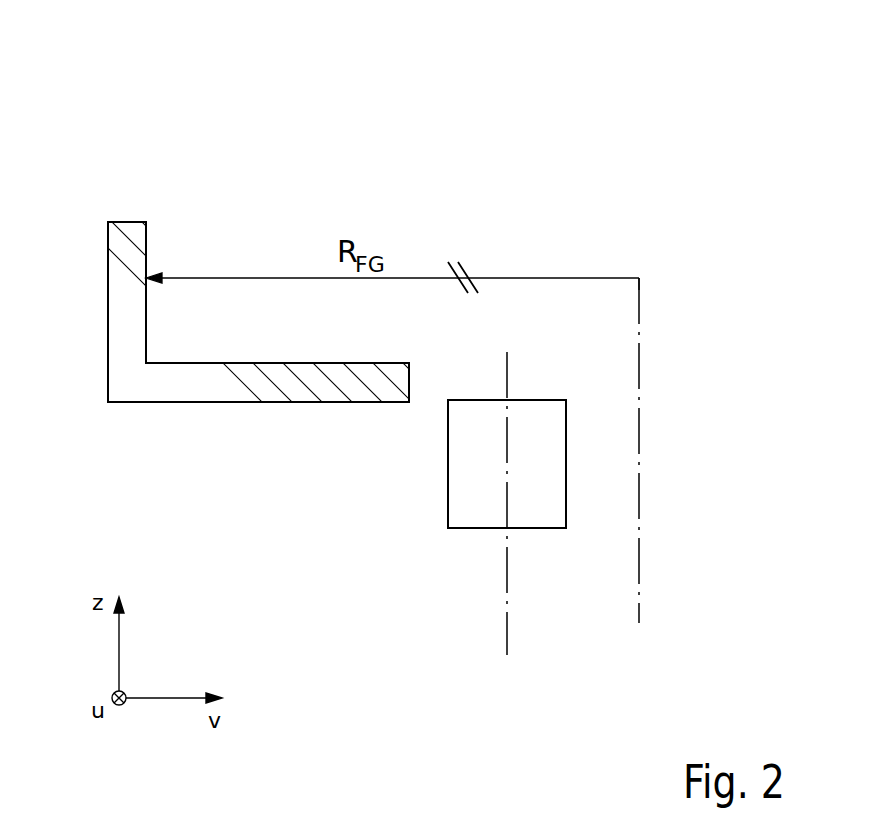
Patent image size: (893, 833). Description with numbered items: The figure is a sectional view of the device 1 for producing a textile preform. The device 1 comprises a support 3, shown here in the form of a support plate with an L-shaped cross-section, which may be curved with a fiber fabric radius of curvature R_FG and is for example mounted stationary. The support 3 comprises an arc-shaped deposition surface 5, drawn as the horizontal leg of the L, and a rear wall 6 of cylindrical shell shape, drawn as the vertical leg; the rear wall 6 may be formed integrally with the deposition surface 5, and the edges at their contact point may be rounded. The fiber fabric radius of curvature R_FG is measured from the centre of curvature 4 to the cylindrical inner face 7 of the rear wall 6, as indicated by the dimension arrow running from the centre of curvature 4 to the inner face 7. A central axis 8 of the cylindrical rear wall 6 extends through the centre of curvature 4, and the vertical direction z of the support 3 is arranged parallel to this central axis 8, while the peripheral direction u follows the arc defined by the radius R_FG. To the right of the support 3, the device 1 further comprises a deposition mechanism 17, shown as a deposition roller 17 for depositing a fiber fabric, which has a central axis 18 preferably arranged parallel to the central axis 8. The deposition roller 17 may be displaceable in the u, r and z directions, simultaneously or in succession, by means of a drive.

The device 1 is at (194, 100).
The support 3 is at (147, 404).
The centre of curvature 4 is at (639, 277).
The deposition surface 5 is at (317, 388).
The rear wall 6 is at (122, 282).
The cylindrical inner face 7 is at (147, 238).
The central axis 8 is at (639, 596).
The deposition roller 17 is at (468, 514).
The central axis 18 is at (507, 640).